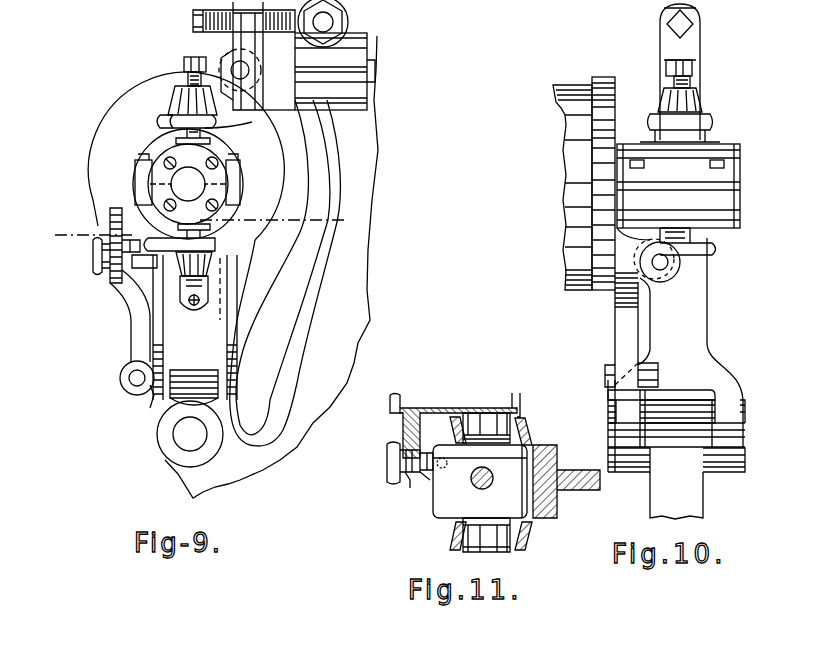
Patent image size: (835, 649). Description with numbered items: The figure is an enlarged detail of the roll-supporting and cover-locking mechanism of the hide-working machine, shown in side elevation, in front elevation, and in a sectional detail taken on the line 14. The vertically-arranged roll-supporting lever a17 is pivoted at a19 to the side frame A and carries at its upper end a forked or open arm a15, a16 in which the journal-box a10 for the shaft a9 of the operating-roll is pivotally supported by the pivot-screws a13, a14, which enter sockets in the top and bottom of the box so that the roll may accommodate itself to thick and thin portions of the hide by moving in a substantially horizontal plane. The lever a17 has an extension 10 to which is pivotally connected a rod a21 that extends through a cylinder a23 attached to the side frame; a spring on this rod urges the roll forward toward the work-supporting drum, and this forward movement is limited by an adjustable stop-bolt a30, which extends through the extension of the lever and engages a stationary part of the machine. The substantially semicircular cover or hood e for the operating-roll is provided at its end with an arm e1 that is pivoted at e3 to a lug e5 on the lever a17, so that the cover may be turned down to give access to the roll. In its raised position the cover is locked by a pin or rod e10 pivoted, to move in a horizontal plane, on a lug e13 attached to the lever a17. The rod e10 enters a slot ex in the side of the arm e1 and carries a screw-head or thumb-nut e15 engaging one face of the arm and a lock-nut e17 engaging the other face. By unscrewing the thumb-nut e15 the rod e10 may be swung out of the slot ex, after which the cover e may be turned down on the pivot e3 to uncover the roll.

In FIG. 9, the side frame A is at (343, 341).
In FIG. 10, the side frame A is at (655, 492).
In FIG. 9, the cover or hood e is at (88, 158).
In FIG. 11, the cover or hood e is at (392, 404).
In FIG. 10, the cover or hood e is at (570, 158).
In FIG. 9, the arm e1 is at (131, 333).
In FIG. 10, the arm e1 is at (615, 345).
In FIG. 9, the pivot e3 is at (133, 378).
In FIG. 9, the lug e5 is at (150, 392).
In FIG. 9, the locking pin or rod e10 is at (120, 285).
In FIG. 11, the locking pin or rod e10 is at (430, 478).
In FIG. 9, the lug e13 is at (126, 300).
In FIG. 9, the thumb-nut e15 is at (100, 264).
In FIG. 11, the thumb-nut e15 is at (389, 464).
In FIG. 10, the thumb-nut e15 is at (648, 270).
In FIG. 9, the lock-nut e17 is at (128, 250).
In FIG. 11, the lock-nut e17 is at (430, 452).
In FIG. 11, the slot ex is at (406, 480).
In FIG. 10, the slot ex is at (672, 274).
In FIG. 9, the extension 10 is at (258, 44).
In FIG. 10, the extension 10 is at (700, 64).
In FIG. 9, the section line 14 is at (201, 229).
In FIG. 9, the shaft a9 is at (186, 178).
In FIG. 9, the journal-box a10 is at (152, 190).
In FIG. 10, the journal-box a10 is at (732, 144).
In FIG. 9, the pivot-screw a13 is at (184, 60).
In FIG. 10, the pivot-screw a13 is at (666, 66).
In FIG. 9, the pivot-screw a14 is at (194, 318).
In FIG. 9, the forked arm a15 is at (176, 98).
In FIG. 10, the forked arm a15 is at (704, 118).
In FIG. 9, the forked arm a16 is at (205, 248).
In FIG. 11, the forked arm a16 is at (512, 505).
In FIG. 10, the forked arm a16 is at (717, 248).
In FIG. 9, the roll-supporting lever a17 is at (237, 330).
In FIG. 11, the roll-supporting lever a17 is at (560, 462).
In FIG. 10, the roll-supporting lever a17 is at (693, 320).
In FIG. 9, the pivot a19 is at (186, 438).
In FIG. 9, the rod a21 is at (262, 90).
In FIG. 9, the cylinder a23 is at (350, 56).
In FIG. 9, the adjustable stop-bolt a30 is at (193, 20).
In FIG. 10, the adjustable stop-bolt a30 is at (668, 24).